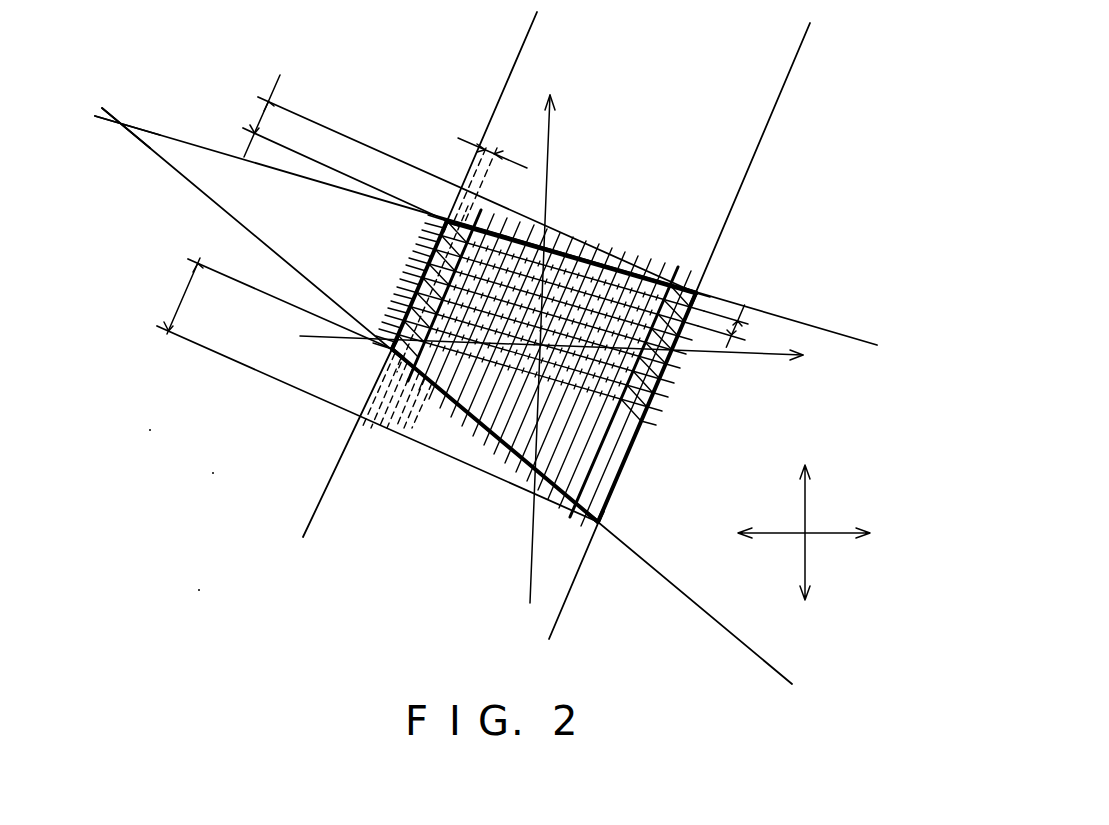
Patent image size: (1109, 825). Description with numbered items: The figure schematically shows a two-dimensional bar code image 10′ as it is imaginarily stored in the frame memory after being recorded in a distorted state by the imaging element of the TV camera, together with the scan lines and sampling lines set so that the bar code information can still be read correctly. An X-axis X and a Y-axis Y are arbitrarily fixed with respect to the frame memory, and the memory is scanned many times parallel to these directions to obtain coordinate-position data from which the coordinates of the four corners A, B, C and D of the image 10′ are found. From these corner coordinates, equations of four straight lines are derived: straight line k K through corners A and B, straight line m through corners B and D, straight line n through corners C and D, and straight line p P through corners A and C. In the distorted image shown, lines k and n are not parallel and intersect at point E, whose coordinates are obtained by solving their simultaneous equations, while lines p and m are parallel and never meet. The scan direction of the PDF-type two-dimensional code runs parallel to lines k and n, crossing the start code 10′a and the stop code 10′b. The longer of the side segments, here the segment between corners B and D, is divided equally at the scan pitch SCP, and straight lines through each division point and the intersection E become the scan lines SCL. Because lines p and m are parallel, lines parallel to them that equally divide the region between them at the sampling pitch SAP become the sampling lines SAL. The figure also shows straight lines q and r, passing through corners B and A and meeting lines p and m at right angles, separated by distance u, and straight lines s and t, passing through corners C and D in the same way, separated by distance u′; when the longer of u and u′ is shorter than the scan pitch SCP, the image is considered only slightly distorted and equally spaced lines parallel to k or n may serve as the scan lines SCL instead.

The two-dimensional bar code image 10′ is at (490, 437).
The start code 10′a is at (385, 420).
The stop code 10′b is at (612, 472).
The scan lines SCL is at (655, 423).
The sampling lines SAL is at (552, 244).
The sampling pitch SAP is at (495, 140).
The scan pitch SCP is at (742, 330).
The straight line k K is at (836, 333).
The straight line n is at (742, 642).
The intersection point E is at (122, 125).
The straight line p P is at (528, 33).
The straight line m is at (778, 97).
The straight line q is at (316, 123).
The straight line r is at (277, 143).
The straight line s is at (215, 271).
The straight line t is at (207, 348).
The distance u is at (265, 113).
The distance u′ is at (183, 297).
The X-axis X is at (548, 150).
The Y-axis Y is at (763, 357).
The corner A is at (447, 219).
The corner B is at (697, 292).
The corner C is at (391, 351).
The corner D is at (599, 524).